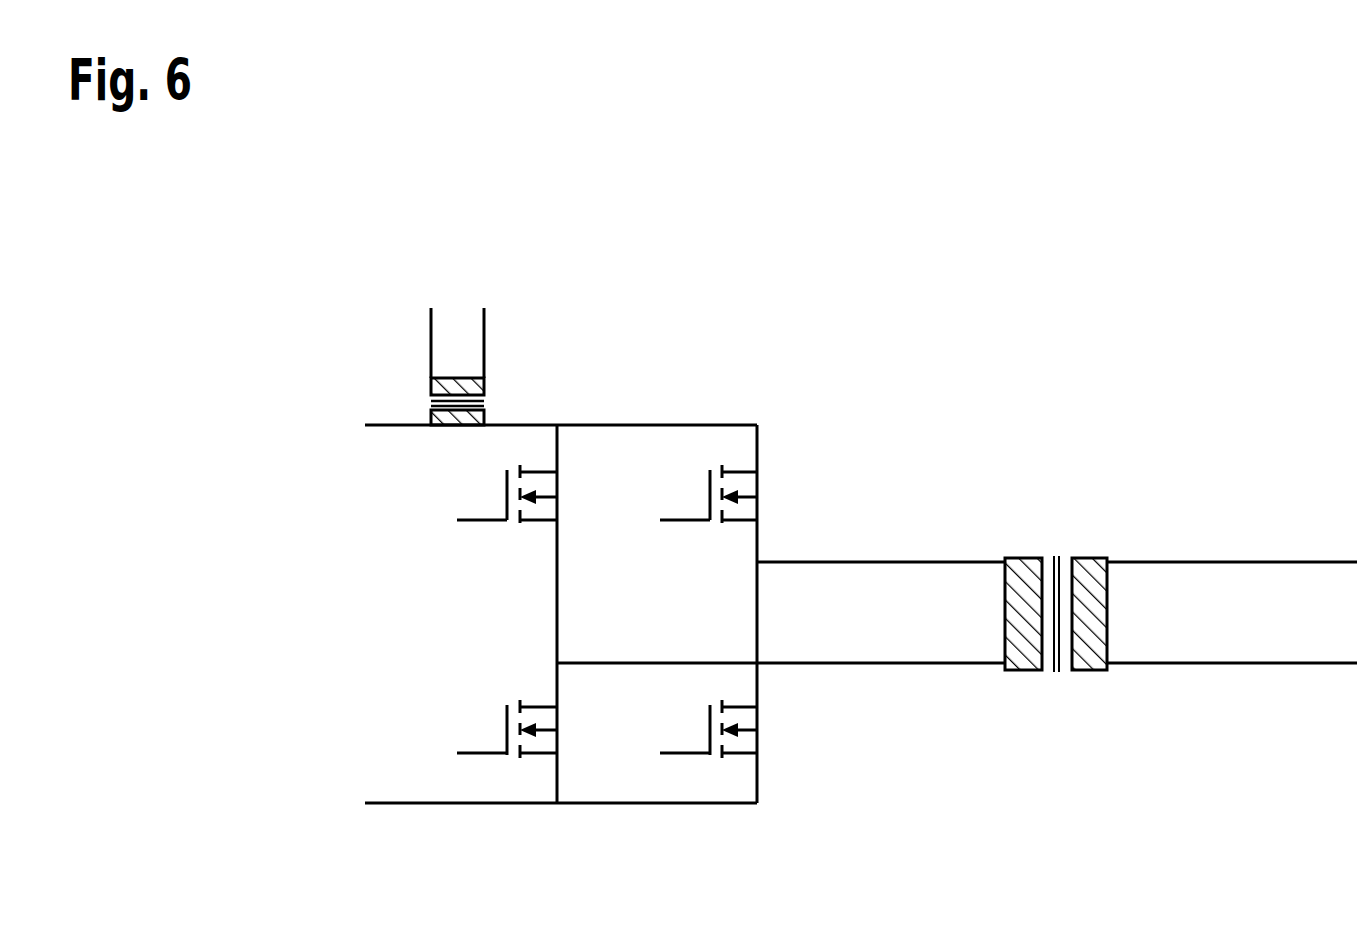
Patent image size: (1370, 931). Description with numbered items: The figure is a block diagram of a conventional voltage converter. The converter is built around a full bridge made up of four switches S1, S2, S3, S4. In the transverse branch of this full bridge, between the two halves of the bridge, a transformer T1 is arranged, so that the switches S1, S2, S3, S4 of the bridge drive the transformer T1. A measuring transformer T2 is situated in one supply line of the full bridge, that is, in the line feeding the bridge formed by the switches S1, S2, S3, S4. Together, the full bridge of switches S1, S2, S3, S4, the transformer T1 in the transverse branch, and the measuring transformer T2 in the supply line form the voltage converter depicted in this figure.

The switch S1 is at (507, 492).
The switch S2 is at (710, 492).
The switch S3 is at (507, 726).
The switch S4 is at (710, 726).
The transformer T1 is at (1107, 525).
The measuring transformer T2 is at (431, 386).